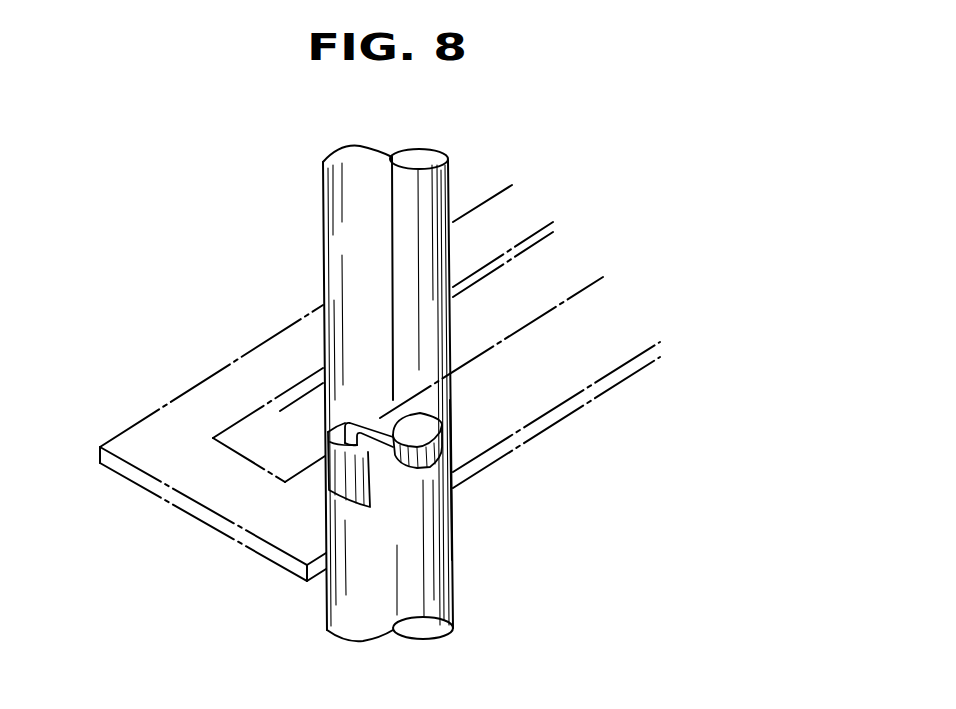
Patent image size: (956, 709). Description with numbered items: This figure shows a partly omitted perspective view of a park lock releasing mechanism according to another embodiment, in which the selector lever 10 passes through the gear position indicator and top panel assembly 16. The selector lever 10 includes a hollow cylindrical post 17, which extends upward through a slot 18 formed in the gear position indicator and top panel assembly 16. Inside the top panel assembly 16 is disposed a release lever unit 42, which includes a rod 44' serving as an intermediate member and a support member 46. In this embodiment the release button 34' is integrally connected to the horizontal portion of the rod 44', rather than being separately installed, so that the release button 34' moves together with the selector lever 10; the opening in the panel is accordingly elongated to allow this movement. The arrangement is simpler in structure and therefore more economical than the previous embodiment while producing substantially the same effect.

The selector lever 10 is at (455, 186).
The gear position indicator and top panel assembly 16 is at (152, 462).
The hollow cylindrical post 17 is at (345, 240).
The slot 18 is at (272, 403).
The release button 34' is at (511, 440).
The release lever unit 42 is at (465, 495).
The rod 44' is at (444, 491).
The support member 46 is at (345, 497).